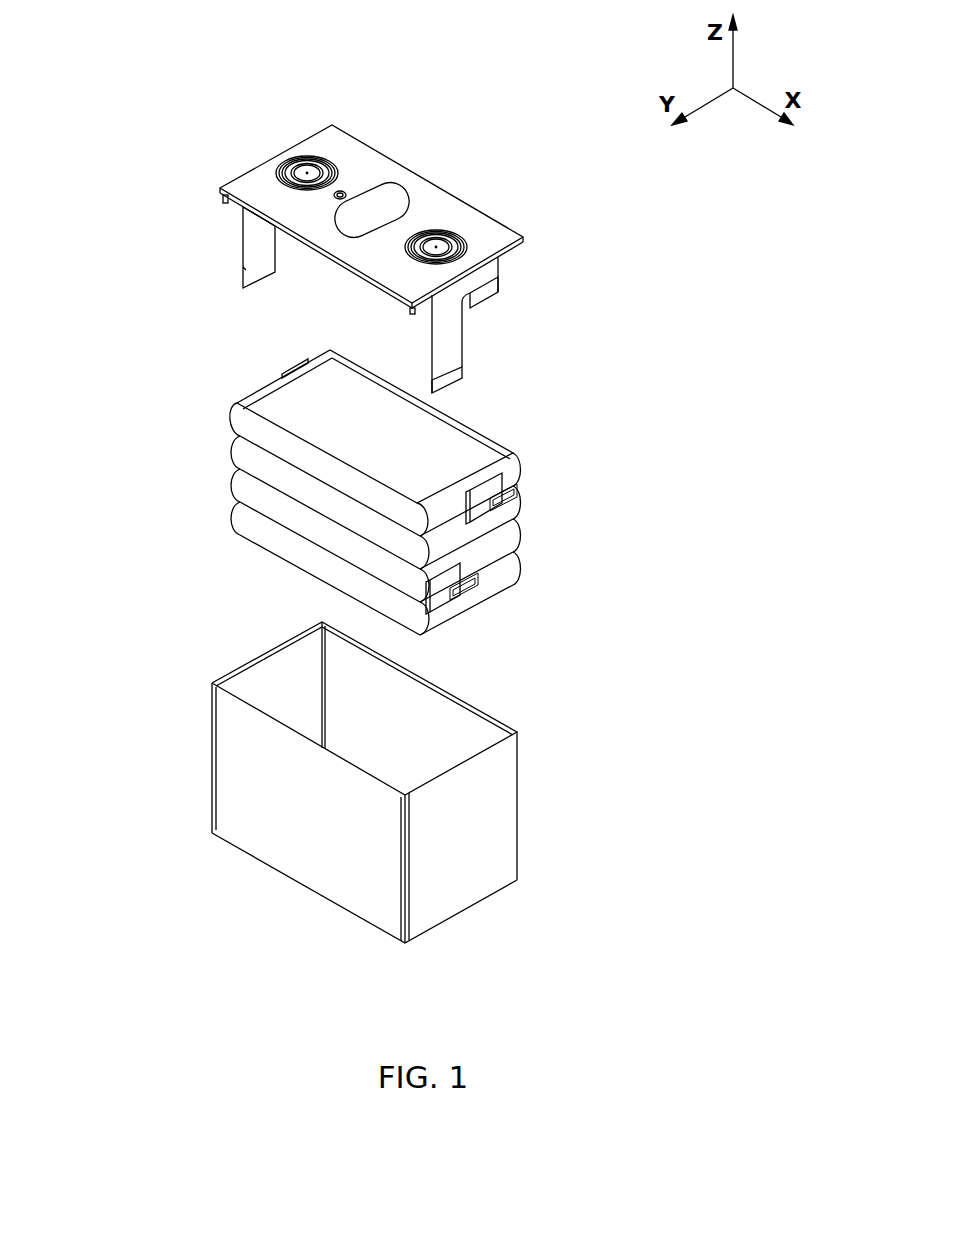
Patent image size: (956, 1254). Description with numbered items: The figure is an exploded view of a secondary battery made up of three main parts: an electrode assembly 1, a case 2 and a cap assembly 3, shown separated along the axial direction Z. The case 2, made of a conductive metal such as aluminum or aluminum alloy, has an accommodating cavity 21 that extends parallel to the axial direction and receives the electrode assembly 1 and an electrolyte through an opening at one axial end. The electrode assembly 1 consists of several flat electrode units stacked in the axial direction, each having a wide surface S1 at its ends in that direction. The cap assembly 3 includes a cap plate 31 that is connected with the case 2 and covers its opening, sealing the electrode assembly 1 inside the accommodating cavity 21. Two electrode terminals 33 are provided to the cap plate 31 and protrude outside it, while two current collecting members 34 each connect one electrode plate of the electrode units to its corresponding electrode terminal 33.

The electrode assembly 1 is at (142, 363).
The case 2 is at (497, 813).
The accommodating cavity 21 is at (482, 727).
The cap assembly 3 is at (197, 110).
The cap plate 31 is at (403, 185).
The electrode terminal 33 is at (302, 160).
The current collecting member 34 is at (260, 253).
The wide surface S1 is at (460, 443).